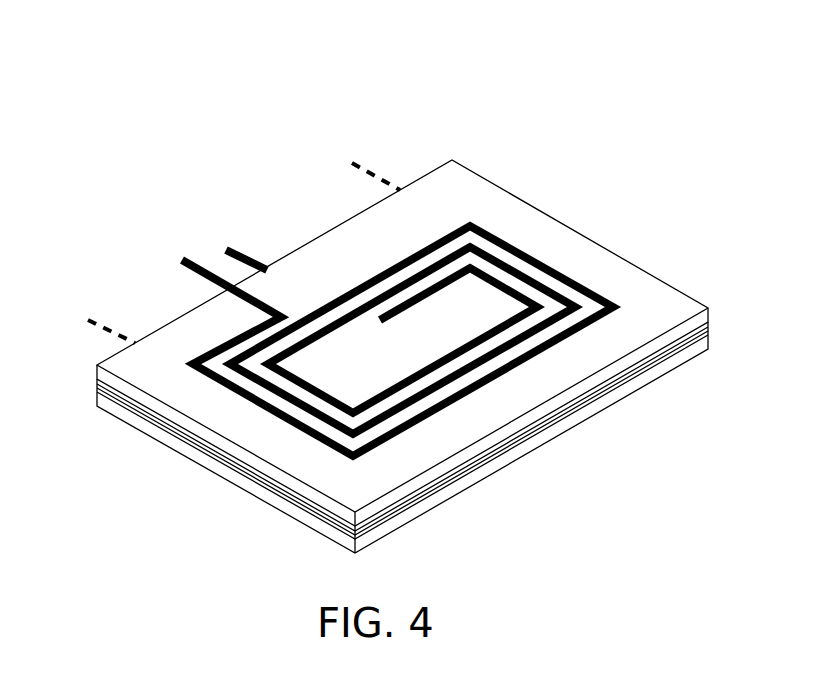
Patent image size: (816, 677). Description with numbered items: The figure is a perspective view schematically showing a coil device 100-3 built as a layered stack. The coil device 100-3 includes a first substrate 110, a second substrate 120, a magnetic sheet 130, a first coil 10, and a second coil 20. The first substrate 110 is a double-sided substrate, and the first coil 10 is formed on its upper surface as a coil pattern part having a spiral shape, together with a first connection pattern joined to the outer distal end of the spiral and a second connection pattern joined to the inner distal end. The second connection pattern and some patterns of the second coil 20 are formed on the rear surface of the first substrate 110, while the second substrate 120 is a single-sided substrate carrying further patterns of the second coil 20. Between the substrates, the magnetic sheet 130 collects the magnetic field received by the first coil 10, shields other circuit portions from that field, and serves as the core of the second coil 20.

The coil device 100-3 is at (396, 296).
The first coil 10 is at (508, 243).
The second coil 20 is at (118, 315).
The first substrate 110 is at (592, 382).
The second substrate 120 is at (465, 480).
The magnetic sheet 130 is at (530, 433).